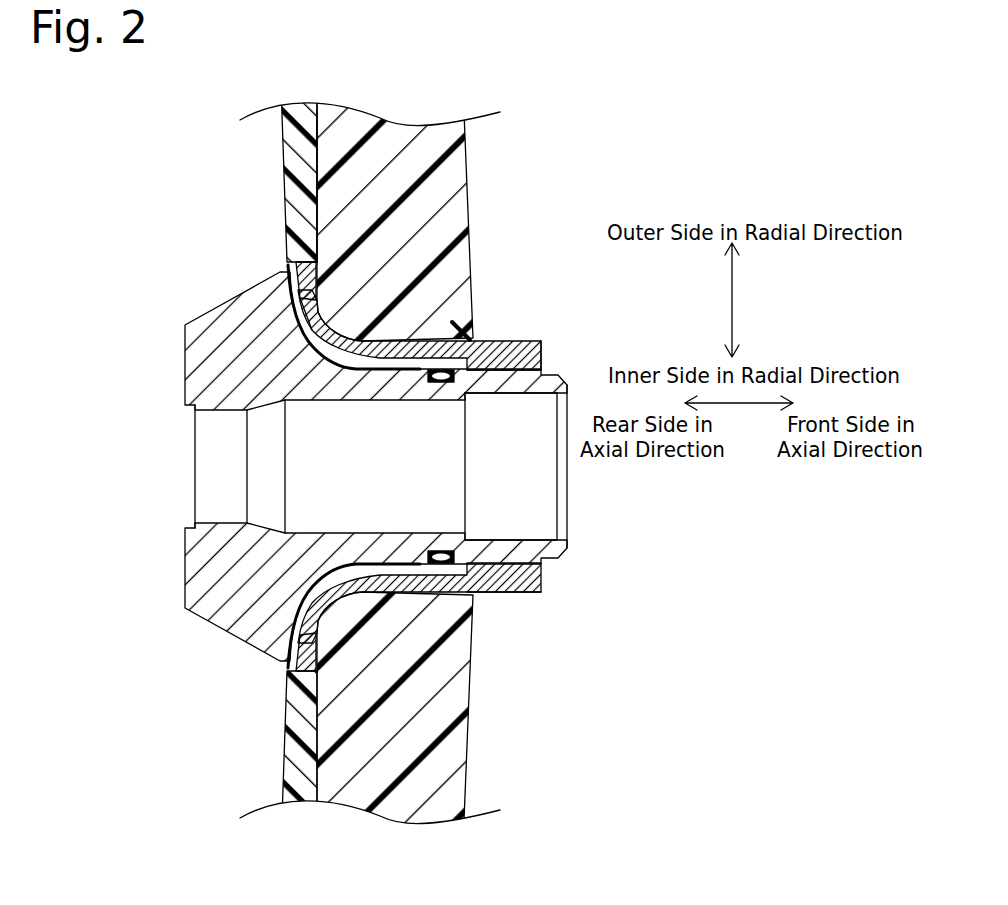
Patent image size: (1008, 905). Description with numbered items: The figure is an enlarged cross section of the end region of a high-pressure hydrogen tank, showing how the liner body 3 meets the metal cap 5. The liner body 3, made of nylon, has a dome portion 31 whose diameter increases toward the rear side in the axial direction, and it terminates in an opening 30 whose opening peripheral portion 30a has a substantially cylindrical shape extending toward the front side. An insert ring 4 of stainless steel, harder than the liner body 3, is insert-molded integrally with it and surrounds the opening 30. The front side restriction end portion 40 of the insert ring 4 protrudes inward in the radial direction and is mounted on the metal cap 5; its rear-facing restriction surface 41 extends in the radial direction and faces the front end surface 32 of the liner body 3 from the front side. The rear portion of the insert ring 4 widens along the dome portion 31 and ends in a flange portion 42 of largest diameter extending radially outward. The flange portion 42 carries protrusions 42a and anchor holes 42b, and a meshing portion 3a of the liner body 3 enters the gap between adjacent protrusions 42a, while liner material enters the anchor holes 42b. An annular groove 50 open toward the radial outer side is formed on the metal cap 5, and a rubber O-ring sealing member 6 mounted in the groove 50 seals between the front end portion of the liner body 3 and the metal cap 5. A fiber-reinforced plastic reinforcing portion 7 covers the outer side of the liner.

The liner body 3 is at (298, 200).
The meshing portion 3a is at (326, 318).
The insert ring 4 is at (428, 222).
The metal cap 5 is at (550, 553).
The sealing member 6 is at (440, 556).
The reinforcing portion 7 is at (455, 750).
The opening 30 is at (478, 533).
The opening peripheral portion 30a is at (501, 608).
The dome portion 31 is at (317, 160).
The front end surface 32 is at (483, 350).
The front side restriction end portion 40 is at (545, 346).
The restriction surface 41 is at (445, 340).
The flange portion 42 is at (292, 276).
The protrusion 42a is at (297, 273).
The anchor hole 42b is at (308, 340).
The groove 50 is at (442, 382).